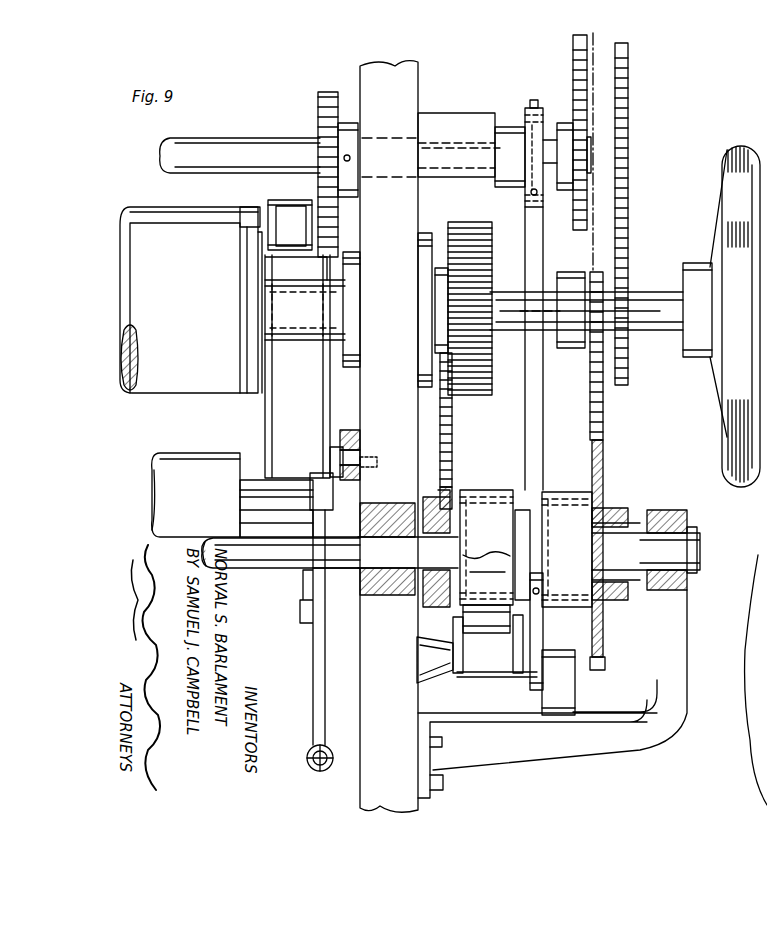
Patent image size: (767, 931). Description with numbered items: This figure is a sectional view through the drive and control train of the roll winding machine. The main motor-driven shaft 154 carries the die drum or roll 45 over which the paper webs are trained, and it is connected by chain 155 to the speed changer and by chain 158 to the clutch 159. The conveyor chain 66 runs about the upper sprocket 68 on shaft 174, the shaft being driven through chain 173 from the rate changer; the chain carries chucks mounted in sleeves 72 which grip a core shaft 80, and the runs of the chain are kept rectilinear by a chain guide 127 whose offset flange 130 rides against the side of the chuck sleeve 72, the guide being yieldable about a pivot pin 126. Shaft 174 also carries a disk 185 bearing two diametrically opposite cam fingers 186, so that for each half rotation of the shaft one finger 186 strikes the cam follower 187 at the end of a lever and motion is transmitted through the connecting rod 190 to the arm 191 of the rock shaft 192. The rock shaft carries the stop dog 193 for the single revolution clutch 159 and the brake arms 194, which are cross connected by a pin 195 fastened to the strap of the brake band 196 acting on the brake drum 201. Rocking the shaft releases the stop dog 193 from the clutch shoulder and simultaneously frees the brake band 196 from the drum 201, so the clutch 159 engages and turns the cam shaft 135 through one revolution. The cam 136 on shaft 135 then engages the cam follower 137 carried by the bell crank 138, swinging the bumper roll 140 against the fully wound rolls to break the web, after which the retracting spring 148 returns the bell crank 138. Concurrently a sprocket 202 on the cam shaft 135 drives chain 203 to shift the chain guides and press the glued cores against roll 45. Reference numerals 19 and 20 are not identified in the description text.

The guard 19 is at (756, 680).
The frame plate 20 is at (400, 803).
The roll 45 is at (183, 373).
The chain 66 is at (318, 118).
The upper sprocket 68 is at (347, 120).
The sleeve 72 is at (283, 206).
The core shaft 80 is at (250, 207).
The pivot pin 126 is at (358, 447).
The chain guide 127 is at (317, 405).
The offset flange 130 is at (270, 408).
The cam shaft 135 is at (262, 557).
The cam 136 is at (307, 553).
The cam follower 137 is at (297, 503).
The bell crank 138 is at (323, 667).
The bumper roll 140 is at (193, 470).
The retracting spring 148 is at (312, 763).
The shaft 154 is at (650, 303).
The chain 155 is at (623, 242).
The chain 158 is at (595, 427).
The clutch 159 is at (603, 500).
The chain 173 is at (575, 48).
The shaft 174 is at (440, 150).
The disk 185 is at (523, 192).
The cam finger 186 is at (523, 117).
The cam follower 187 is at (540, 90).
The connecting rod 190 is at (532, 232).
The arm 191 is at (523, 682).
The rock shaft 192 is at (453, 683).
The stop dog 193 is at (537, 617).
The brake arm 194 is at (517, 637).
The pin 195 is at (490, 668).
The brake band 196 is at (482, 497).
The brake drum 201 is at (487, 572).
The sprocket 202 is at (447, 526).
The chain 203 is at (450, 442).